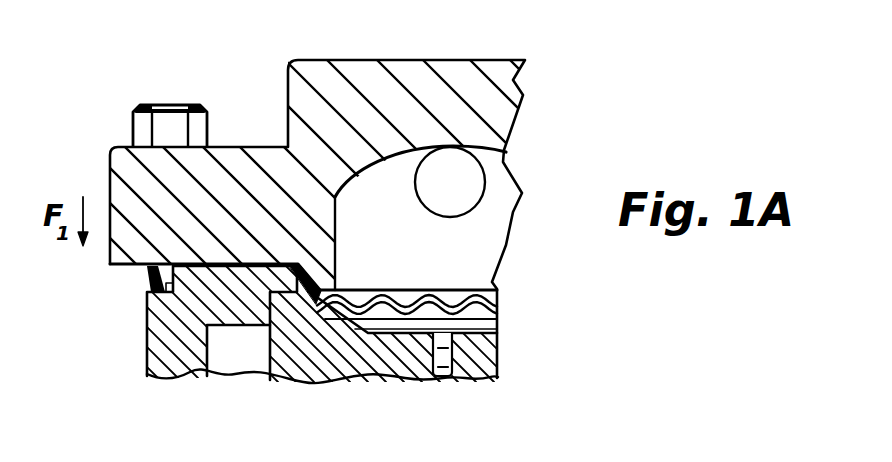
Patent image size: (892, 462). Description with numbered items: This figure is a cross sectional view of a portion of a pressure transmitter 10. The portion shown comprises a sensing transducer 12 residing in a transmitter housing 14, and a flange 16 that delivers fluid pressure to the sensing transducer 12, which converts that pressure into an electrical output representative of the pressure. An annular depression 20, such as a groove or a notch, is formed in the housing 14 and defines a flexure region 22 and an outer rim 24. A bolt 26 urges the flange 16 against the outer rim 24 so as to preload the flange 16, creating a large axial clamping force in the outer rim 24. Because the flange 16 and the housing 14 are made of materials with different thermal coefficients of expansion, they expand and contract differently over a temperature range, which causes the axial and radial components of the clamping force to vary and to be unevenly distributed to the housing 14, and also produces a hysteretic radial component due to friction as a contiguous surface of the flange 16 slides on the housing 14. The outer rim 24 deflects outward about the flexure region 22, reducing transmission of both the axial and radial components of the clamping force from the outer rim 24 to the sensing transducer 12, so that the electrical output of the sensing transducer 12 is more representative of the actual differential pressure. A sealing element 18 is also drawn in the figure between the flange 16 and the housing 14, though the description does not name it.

The pressure transmitter 10 is at (520, 46).
The sensing transducer 12 is at (526, 346).
The transmitter housing 14 is at (168, 355).
The flange 16 is at (118, 183).
The sealing strip 18 is at (496, 303).
The annular depression 20 is at (158, 294).
The flexure region 22 is at (147, 340).
The outer rim 24 is at (165, 290).
The bolt 26 is at (146, 128).